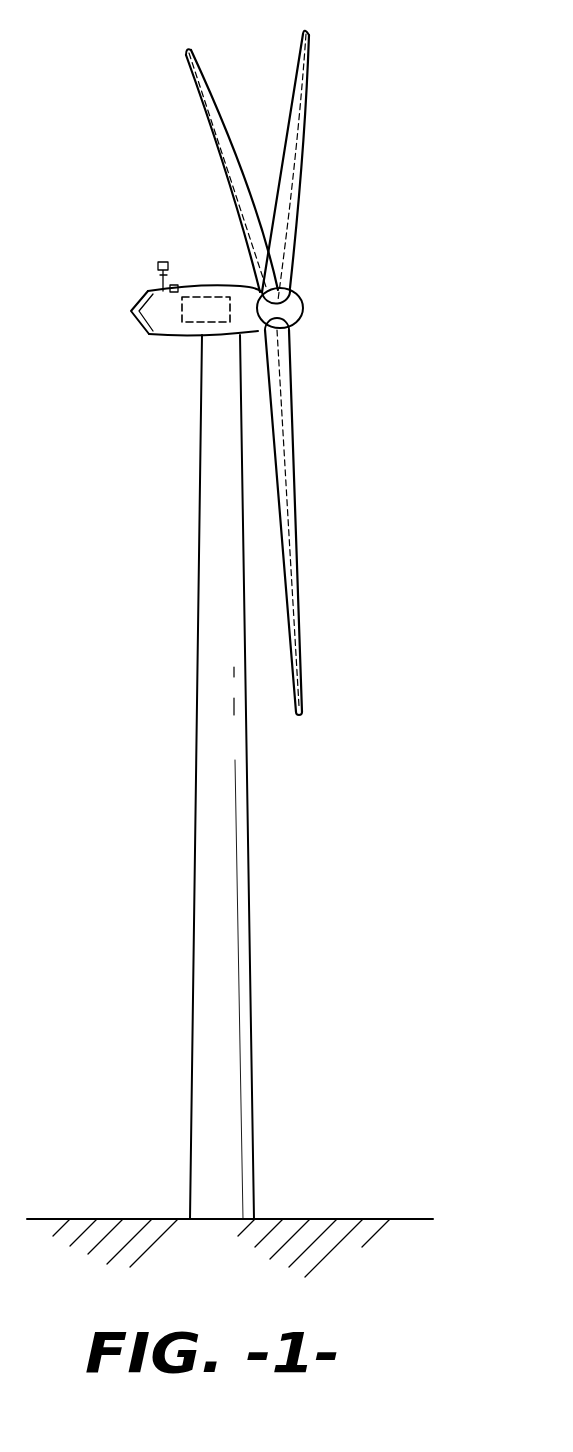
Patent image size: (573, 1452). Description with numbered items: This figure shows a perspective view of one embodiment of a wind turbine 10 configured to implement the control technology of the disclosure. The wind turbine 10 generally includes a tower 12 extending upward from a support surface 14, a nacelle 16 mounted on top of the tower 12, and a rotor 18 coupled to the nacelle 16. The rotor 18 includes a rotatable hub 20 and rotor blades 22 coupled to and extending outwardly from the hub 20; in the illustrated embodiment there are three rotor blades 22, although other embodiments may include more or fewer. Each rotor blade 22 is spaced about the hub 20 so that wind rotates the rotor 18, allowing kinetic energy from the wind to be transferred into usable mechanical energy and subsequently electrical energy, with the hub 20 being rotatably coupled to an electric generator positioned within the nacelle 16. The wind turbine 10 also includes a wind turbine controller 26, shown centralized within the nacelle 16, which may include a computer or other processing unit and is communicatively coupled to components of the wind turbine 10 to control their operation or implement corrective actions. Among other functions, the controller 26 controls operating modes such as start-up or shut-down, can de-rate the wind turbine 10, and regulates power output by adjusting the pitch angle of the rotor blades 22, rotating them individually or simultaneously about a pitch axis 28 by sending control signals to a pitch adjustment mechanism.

The wind turbine 10 is at (438, 110).
The tower 12 is at (207, 897).
The support surface 14 is at (113, 1219).
The nacelle 16 is at (175, 337).
The rotor 18 is at (307, 286).
The rotatable hub 20 is at (302, 318).
The rotor blade 22 is at (297, 77).
The wind turbine controller 26 is at (210, 297).
The pitch axis 28 is at (238, 208).